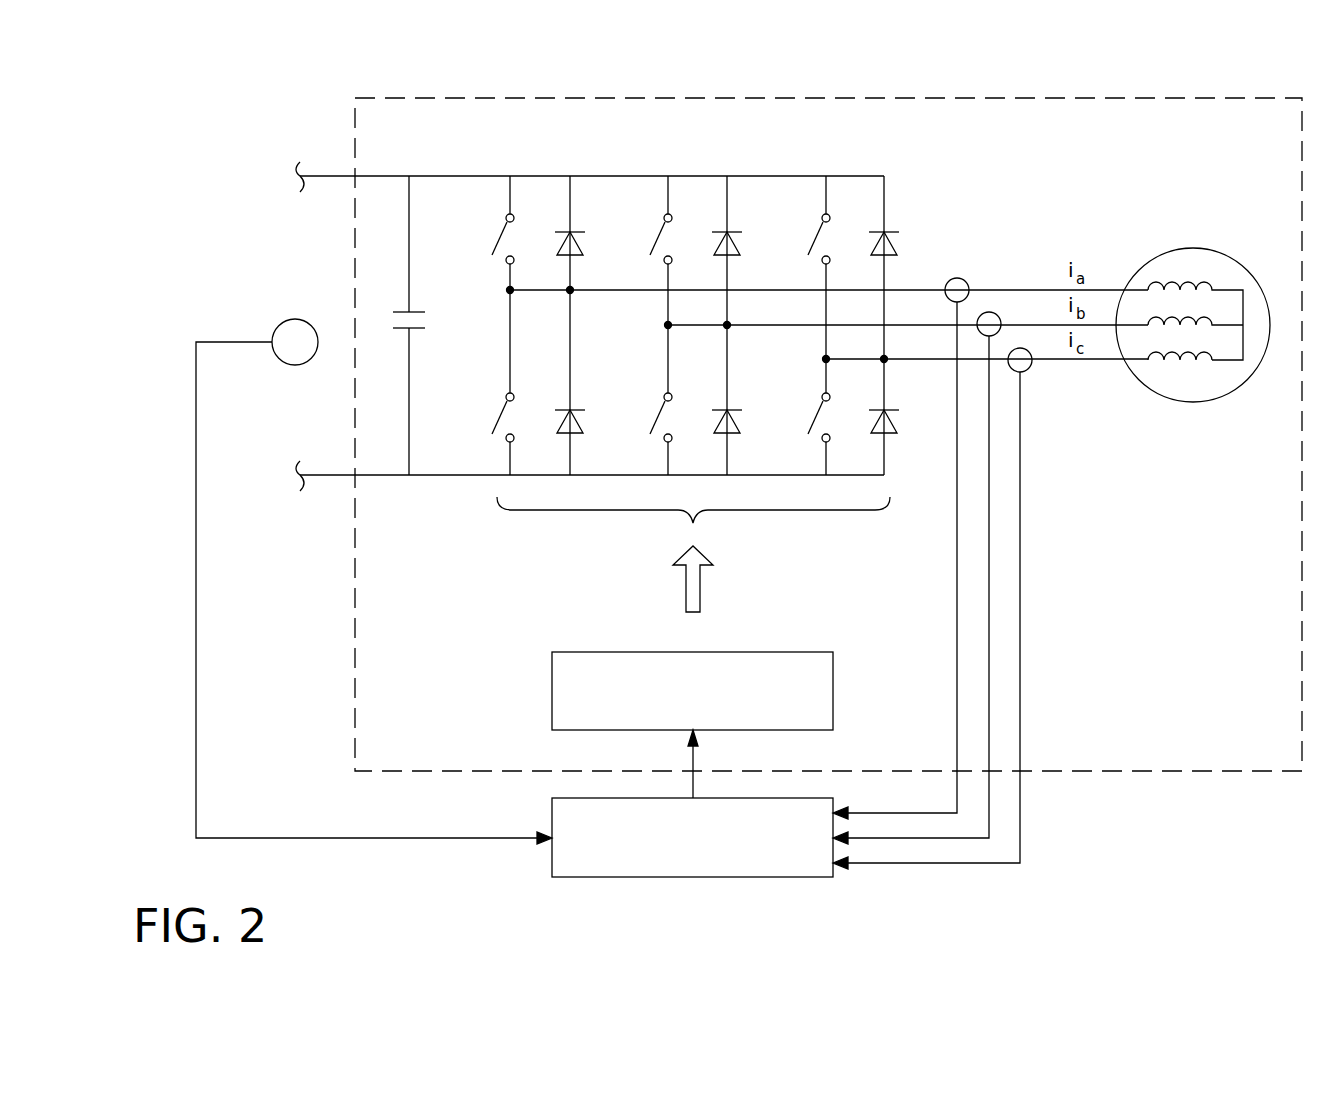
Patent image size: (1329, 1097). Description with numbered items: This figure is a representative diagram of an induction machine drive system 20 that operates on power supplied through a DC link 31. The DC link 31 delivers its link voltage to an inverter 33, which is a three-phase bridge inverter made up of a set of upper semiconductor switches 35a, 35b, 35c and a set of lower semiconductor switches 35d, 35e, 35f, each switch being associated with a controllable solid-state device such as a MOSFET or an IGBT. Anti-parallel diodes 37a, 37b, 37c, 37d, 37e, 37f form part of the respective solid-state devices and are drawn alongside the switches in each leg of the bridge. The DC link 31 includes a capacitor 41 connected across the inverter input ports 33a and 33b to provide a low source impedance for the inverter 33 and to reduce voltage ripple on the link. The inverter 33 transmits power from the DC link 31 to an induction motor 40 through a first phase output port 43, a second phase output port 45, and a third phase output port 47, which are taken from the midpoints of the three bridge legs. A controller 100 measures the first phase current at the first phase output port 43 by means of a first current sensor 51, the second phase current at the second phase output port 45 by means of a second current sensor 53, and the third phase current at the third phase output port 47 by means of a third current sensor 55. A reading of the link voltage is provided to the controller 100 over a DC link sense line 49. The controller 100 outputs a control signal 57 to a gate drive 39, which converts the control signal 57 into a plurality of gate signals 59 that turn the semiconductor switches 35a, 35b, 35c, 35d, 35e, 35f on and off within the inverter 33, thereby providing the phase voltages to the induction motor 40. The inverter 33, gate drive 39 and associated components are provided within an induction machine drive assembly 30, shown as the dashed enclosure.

The induction machine drive system 20 is at (1136, 846).
The induction machine drive assembly 30 is at (1218, 771).
The DC link 31 is at (312, 114).
The inverter 33 is at (718, 152).
The inverter input port 33a is at (485, 176).
The inverter input port 33b is at (463, 478).
The upper semiconductor switch 35a is at (502, 236).
The upper semiconductor switch 35b is at (660, 236).
The upper semiconductor switch 35c is at (818, 236).
The lower semiconductor switch 35d is at (500, 418).
The lower semiconductor switch 35e is at (660, 406).
The lower semiconductor switch 35f is at (818, 410).
The anti-parallel diode 37a is at (578, 252).
The anti-parallel diode 37b is at (735, 252).
The anti-parallel diode 37c is at (896, 246).
The anti-parallel diode 37d is at (578, 430).
The anti-parallel diode 37e is at (735, 430).
The anti-parallel diode 37f is at (892, 430).
The gate drive 39 is at (552, 690).
The induction motor 40 is at (1181, 232).
The capacitor 41 is at (415, 330).
The first phase output port 43 is at (572, 292).
The second phase output port 45 is at (729, 327).
The third phase output port 47 is at (886, 361).
The DC link sense line 49 is at (373, 841).
The first current sensor 51 is at (966, 281).
The second current sensor 53 is at (997, 315).
The third current sensor 55 is at (1025, 371).
The control signal 57 is at (694, 782).
The gate signals 59 is at (702, 588).
The controller 100 is at (700, 879).